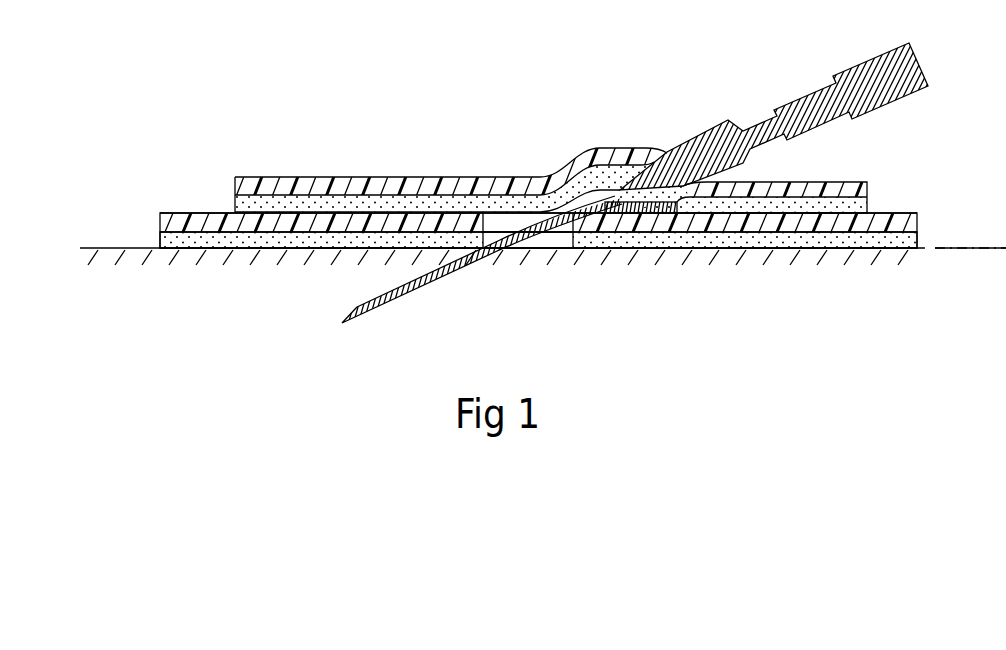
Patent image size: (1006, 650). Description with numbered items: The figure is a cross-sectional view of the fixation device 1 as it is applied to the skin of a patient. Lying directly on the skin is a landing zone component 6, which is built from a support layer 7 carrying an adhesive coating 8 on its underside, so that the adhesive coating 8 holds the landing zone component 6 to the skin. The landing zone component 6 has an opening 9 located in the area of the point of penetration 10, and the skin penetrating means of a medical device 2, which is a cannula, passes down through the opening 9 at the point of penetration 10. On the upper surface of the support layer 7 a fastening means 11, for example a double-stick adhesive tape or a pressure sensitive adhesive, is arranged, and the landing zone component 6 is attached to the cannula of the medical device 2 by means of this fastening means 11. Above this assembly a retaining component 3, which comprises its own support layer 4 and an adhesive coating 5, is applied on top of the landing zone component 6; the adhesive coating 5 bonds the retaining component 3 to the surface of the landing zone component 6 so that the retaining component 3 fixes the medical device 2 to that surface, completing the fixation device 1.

The fixation device 1 is at (250, 53).
The medical device 2 is at (714, 140).
The retaining component 3 is at (867, 193).
The support layer 4 is at (240, 197).
The adhesive coating 5 is at (232, 199).
The landing zone component 6 is at (918, 222).
The support layer 7 is at (160, 220).
The adhesive coating 8 is at (160, 240).
The opening 9 is at (559, 240).
The point of penetration 10 is at (502, 250).
The fastening means 11 is at (620, 215).